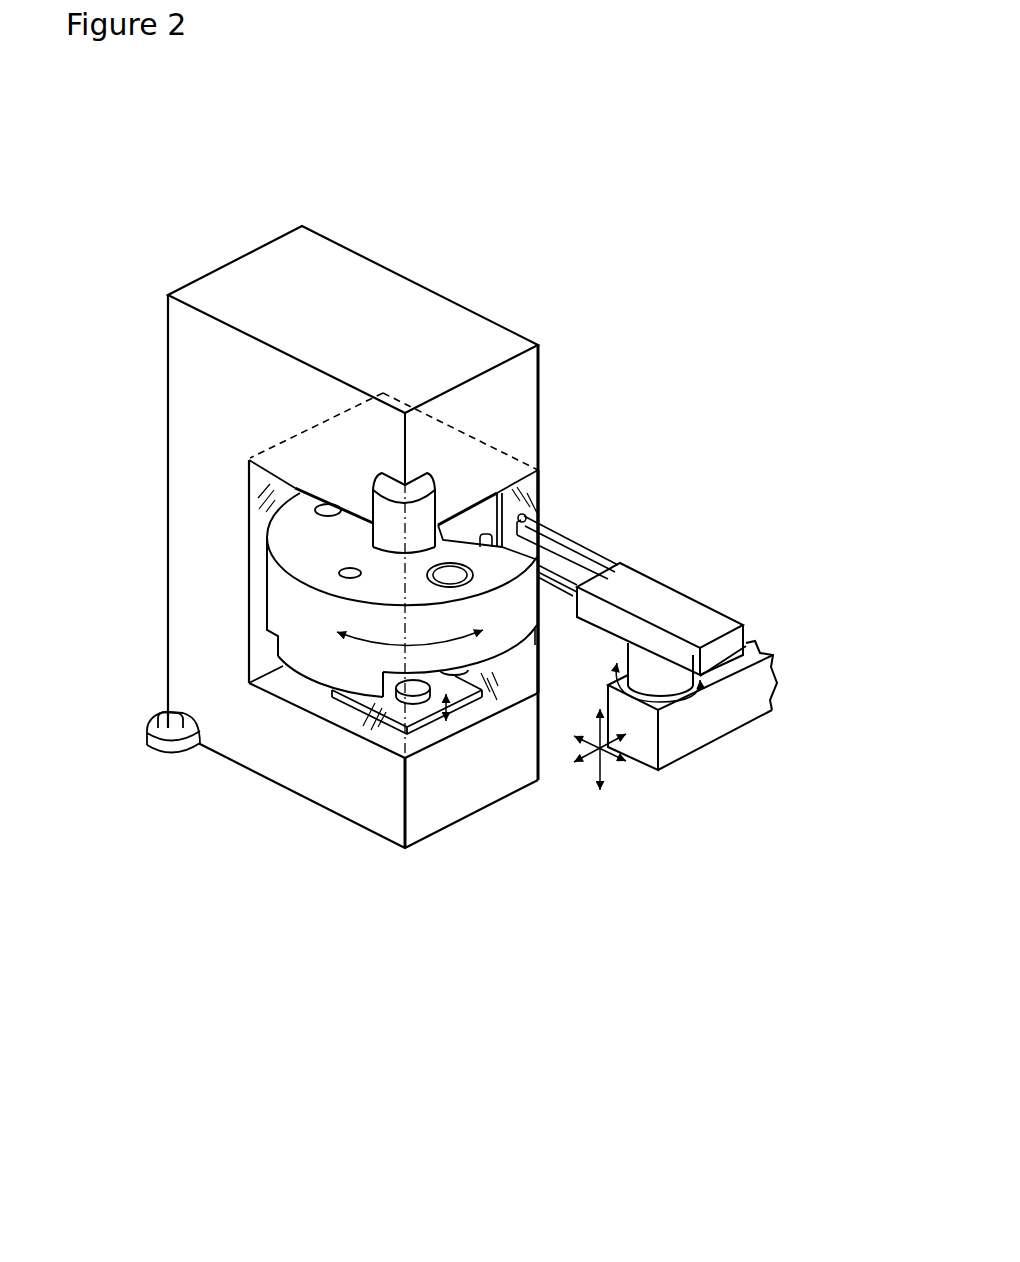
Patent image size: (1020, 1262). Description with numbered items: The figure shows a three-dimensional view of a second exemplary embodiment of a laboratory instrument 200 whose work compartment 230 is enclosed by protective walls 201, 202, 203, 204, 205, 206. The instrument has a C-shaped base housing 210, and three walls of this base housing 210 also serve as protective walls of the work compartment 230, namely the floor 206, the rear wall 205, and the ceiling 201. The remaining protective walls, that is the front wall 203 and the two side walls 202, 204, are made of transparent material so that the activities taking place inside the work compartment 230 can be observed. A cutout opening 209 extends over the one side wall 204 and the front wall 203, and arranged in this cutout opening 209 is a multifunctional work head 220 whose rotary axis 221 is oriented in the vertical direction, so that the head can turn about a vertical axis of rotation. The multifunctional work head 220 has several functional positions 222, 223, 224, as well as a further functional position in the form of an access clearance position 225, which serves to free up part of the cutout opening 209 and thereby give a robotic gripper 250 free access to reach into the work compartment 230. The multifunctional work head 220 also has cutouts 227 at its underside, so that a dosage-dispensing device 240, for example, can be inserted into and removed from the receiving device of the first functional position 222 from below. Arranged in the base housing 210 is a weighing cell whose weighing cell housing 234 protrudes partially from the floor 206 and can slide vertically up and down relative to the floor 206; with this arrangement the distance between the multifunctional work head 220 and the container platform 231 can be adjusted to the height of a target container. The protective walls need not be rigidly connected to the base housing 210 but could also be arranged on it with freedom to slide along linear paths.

The laboratory instrument 200 is at (394, 238).
The ceiling 201 is at (472, 463).
The side wall 202 is at (508, 455).
The front wall 203 is at (540, 488).
The side wall 204 is at (263, 632).
The rear wall 205 is at (263, 452).
The floor 206 is at (310, 693).
The cutout opening 209 is at (489, 517).
The base housing 210 is at (212, 562).
The multifunctional work head 220 is at (307, 537).
The rotary axis 221 is at (407, 622).
The first functional position 222 is at (452, 575).
The functional position 223 is at (350, 570).
The functional position 224 is at (332, 512).
The access clearance position 225 is at (645, 514).
The cutouts 227 is at (507, 663).
The work compartment 230 is at (322, 700).
The container platform 231 is at (418, 698).
The weighing cell housing 234 is at (390, 708).
The dosage-dispensing device 240 is at (458, 673).
The robotic gripper 250 is at (690, 723).